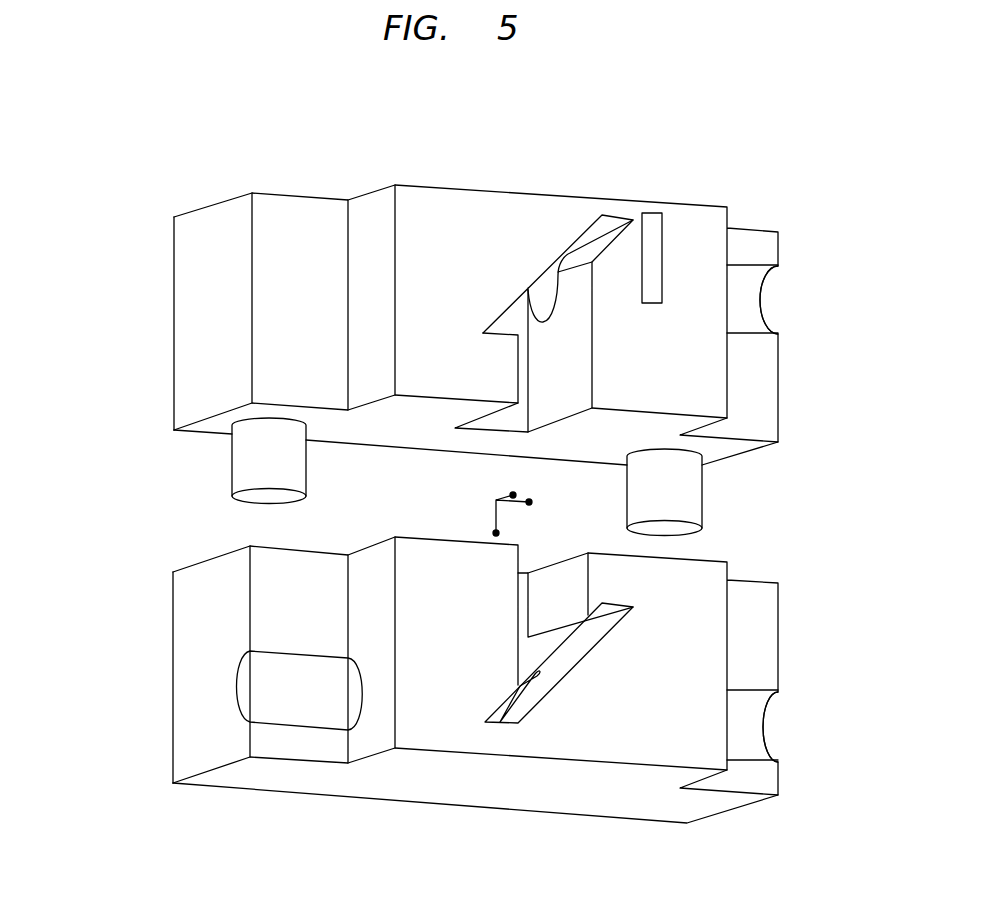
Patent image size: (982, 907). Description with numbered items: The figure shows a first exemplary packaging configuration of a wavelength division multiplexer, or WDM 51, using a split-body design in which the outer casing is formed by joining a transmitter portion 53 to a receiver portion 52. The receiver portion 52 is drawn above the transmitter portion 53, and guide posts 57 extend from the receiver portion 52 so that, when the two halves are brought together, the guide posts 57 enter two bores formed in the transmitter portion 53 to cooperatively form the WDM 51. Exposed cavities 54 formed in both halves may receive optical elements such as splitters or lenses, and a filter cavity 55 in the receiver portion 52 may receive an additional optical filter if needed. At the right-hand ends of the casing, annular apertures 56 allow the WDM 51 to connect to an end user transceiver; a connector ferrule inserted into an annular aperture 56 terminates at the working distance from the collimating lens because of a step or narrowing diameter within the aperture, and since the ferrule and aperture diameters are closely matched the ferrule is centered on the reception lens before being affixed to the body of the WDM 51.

The WDM 51 is at (94, 205).
The receiver portion 52 is at (490, 169).
The transmitter portion 53 is at (487, 828).
The exposed cavities 54 is at (540, 253).
The filter cavity 55 is at (679, 266).
The annular apertures 56 is at (788, 303).
The guide posts 57 is at (325, 482).